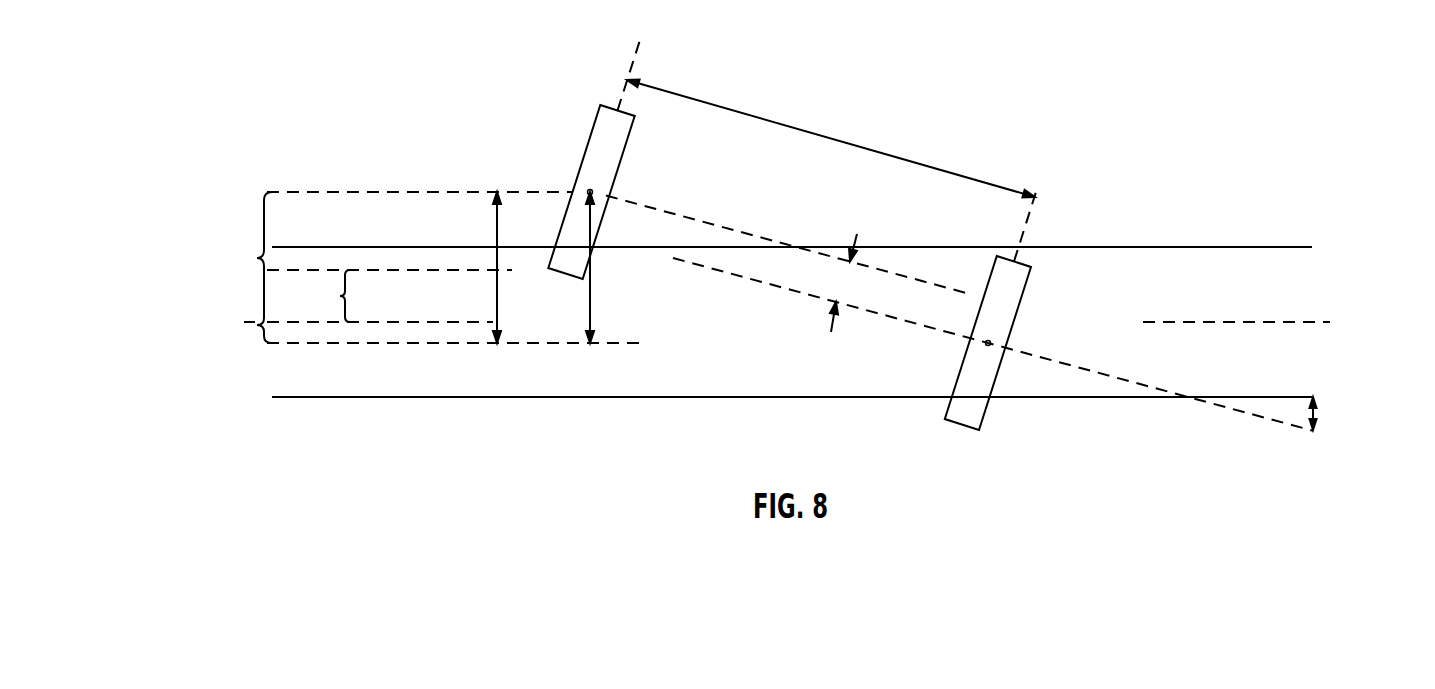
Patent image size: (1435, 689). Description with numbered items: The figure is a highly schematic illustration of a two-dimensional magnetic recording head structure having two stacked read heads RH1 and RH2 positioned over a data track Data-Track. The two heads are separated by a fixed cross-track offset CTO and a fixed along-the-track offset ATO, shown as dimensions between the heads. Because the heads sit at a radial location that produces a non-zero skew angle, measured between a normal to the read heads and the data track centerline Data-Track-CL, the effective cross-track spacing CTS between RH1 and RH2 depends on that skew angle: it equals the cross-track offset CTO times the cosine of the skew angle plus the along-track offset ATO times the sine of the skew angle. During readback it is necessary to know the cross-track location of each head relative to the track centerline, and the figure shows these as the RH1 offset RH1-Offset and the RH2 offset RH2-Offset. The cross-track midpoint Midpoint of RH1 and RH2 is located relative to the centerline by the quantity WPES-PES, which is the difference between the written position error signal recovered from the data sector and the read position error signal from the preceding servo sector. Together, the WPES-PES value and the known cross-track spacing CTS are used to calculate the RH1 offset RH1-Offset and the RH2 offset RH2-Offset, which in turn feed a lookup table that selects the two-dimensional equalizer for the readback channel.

The first read head RH1 is at (597, 145).
The second read head RH2 is at (1012, 290).
The along-the-track offset ATO is at (830, 137).
The cross-track offset CTO is at (959, 313).
The cross-track spacing CTS is at (592, 312).
The WPES-PES value WPES-PES is at (413, 296).
The RH1 offset RH1-Offset is at (257, 258).
The RH2 offset RH2-Offset is at (257, 325).
The data track centerline Data-Track-CL is at (251, 322).
The data track Data-Track is at (1322, 397).
The midpoint of RH1 and RH2 Midpoint is at (497, 268).